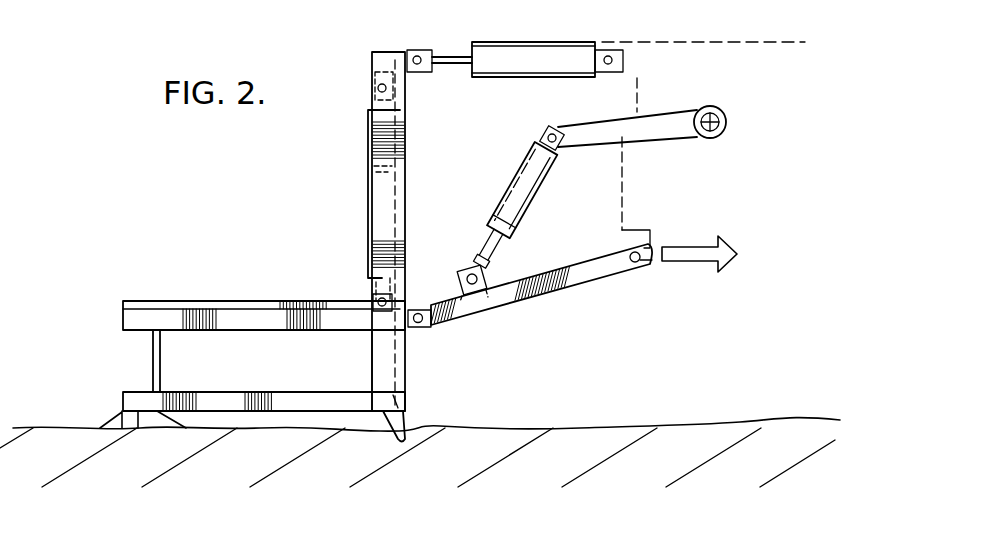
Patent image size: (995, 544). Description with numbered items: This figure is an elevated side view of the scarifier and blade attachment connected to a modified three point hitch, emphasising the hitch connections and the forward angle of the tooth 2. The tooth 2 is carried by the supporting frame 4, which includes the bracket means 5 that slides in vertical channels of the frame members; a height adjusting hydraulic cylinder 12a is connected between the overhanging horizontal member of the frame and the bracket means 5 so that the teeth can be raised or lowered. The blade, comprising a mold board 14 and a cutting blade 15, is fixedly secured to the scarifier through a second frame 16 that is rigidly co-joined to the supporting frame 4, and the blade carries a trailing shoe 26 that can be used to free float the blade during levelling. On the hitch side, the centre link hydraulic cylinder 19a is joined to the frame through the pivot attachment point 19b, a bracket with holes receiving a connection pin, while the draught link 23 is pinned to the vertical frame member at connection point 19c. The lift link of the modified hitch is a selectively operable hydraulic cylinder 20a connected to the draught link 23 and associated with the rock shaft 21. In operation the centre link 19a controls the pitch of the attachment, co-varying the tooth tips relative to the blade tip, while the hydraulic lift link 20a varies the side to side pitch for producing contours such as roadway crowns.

The tooth 2 is at (402, 420).
The supporting frame 4 is at (403, 99).
The bracket means 5 is at (377, 353).
The hydraulic cylinder 12a is at (368, 163).
The mold board 14 is at (165, 382).
The cutting blade 15 is at (188, 428).
The second frame 16 is at (253, 320).
The centre link hydraulic cylinder 19a is at (553, 44).
The pivot attachment point 19b is at (425, 50).
The connection point 19c is at (432, 328).
The hydraulic cylinder lift link 20a is at (533, 202).
The rock shaft 21 is at (670, 130).
The draught link 23 is at (597, 272).
The trailing shoe 26 is at (117, 424).